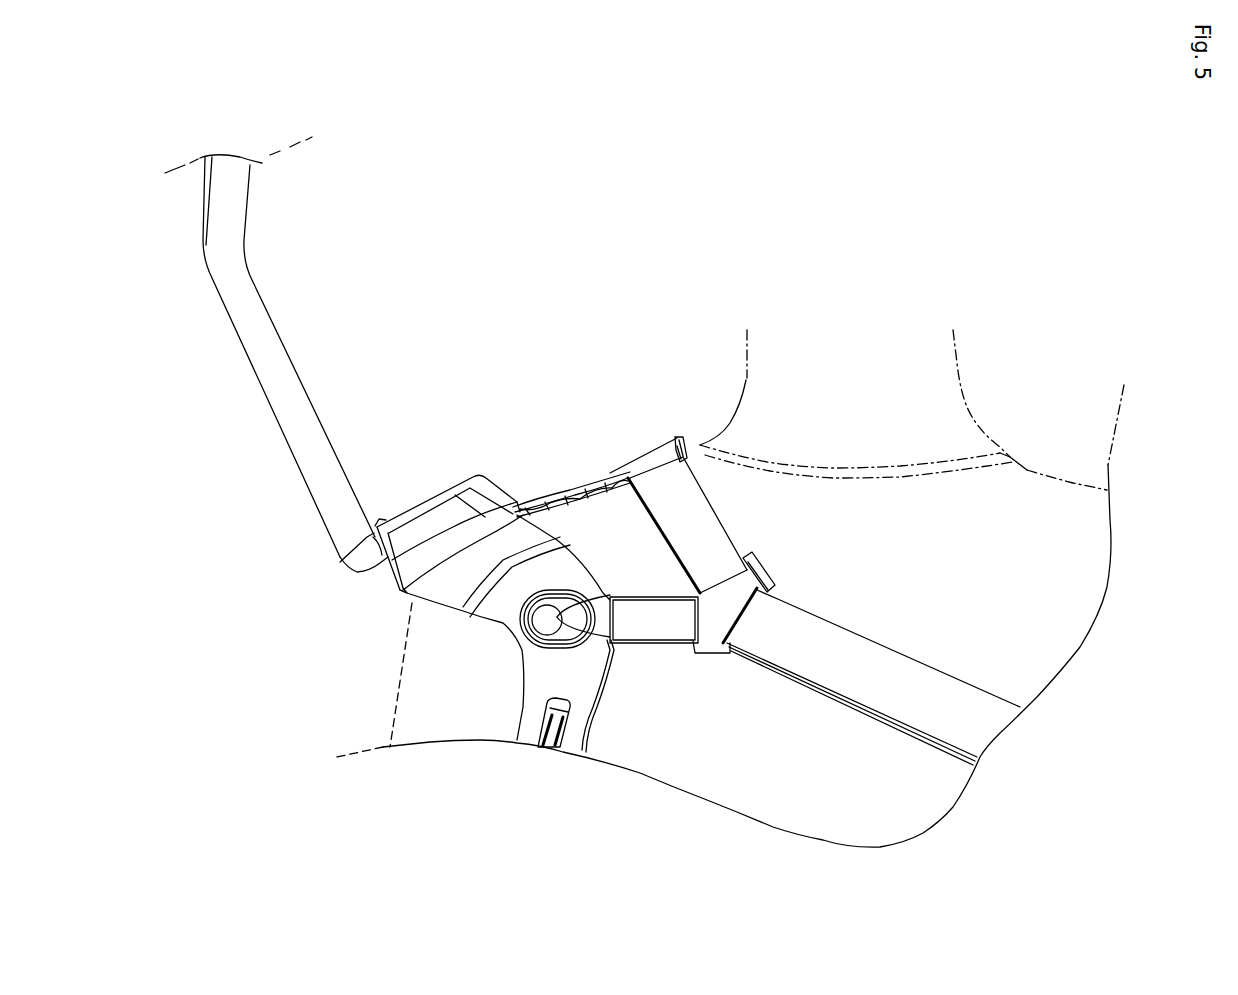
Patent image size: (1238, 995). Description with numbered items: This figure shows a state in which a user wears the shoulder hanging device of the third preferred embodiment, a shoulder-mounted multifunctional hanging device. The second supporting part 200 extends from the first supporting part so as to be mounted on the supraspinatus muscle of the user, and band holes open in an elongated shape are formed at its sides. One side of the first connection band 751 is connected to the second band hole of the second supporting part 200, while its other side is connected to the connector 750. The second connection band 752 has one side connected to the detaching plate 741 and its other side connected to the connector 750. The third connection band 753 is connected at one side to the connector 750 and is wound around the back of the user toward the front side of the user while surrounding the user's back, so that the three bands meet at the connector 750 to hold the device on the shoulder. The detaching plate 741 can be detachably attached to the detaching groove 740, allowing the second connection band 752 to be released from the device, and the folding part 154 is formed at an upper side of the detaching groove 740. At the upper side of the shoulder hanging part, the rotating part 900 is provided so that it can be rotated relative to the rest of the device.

The folding part 154 is at (463, 607).
The second supporting part 200 is at (662, 418).
The detaching groove 740 is at (545, 620).
The detaching plate 741 is at (588, 755).
The connector 750 is at (757, 570).
The first connection band 751 is at (703, 540).
The second connection band 752 is at (657, 627).
The third connection band 753 is at (847, 670).
The rotating part 900 is at (495, 453).